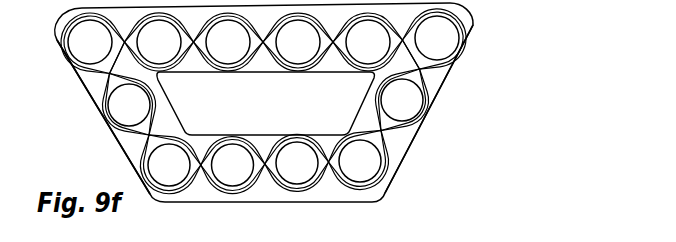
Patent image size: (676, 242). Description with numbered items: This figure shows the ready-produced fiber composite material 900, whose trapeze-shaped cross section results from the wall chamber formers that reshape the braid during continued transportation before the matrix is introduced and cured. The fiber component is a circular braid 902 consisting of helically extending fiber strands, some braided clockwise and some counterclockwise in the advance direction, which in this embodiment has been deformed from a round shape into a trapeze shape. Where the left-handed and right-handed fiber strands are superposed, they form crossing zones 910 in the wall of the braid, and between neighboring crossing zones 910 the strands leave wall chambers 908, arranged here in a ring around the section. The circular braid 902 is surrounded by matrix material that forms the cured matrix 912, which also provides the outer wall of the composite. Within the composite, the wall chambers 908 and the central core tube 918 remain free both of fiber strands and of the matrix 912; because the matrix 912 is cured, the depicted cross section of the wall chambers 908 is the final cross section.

The fiber composite material 900 is at (476, 28).
The circular braid 902 is at (428, 116).
The wall chambers 908 is at (443, 40).
The crossing zones 910 is at (120, 66).
The matrix 912 is at (403, 145).
The core tube 918 is at (205, 110).